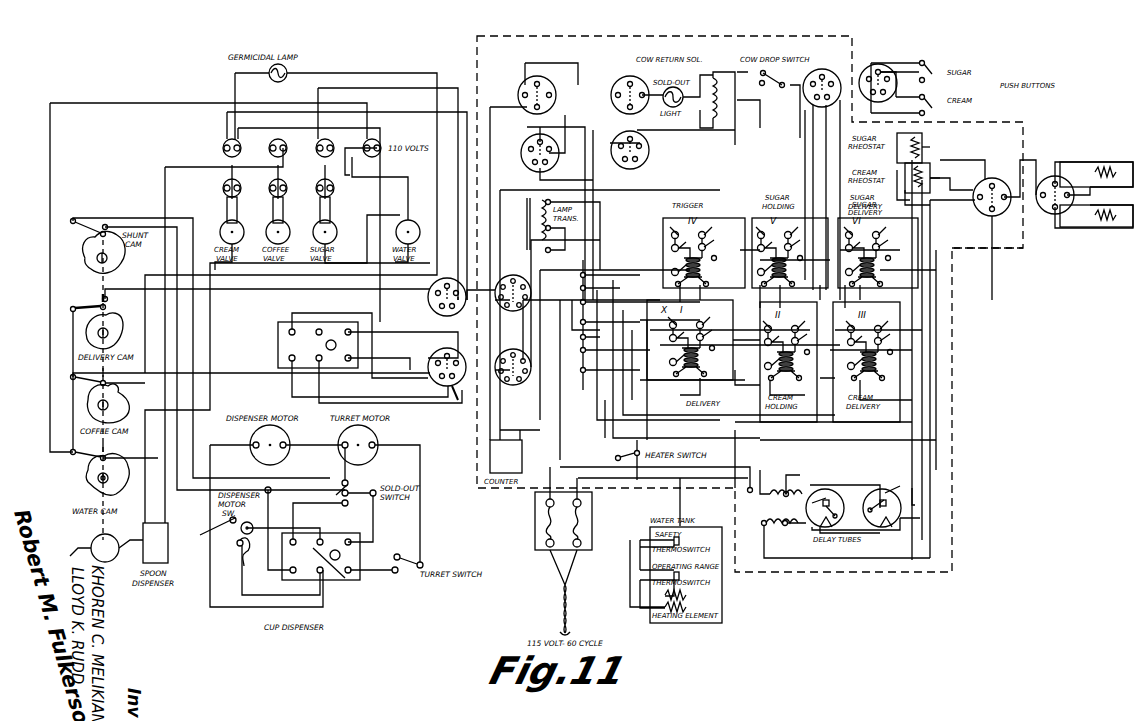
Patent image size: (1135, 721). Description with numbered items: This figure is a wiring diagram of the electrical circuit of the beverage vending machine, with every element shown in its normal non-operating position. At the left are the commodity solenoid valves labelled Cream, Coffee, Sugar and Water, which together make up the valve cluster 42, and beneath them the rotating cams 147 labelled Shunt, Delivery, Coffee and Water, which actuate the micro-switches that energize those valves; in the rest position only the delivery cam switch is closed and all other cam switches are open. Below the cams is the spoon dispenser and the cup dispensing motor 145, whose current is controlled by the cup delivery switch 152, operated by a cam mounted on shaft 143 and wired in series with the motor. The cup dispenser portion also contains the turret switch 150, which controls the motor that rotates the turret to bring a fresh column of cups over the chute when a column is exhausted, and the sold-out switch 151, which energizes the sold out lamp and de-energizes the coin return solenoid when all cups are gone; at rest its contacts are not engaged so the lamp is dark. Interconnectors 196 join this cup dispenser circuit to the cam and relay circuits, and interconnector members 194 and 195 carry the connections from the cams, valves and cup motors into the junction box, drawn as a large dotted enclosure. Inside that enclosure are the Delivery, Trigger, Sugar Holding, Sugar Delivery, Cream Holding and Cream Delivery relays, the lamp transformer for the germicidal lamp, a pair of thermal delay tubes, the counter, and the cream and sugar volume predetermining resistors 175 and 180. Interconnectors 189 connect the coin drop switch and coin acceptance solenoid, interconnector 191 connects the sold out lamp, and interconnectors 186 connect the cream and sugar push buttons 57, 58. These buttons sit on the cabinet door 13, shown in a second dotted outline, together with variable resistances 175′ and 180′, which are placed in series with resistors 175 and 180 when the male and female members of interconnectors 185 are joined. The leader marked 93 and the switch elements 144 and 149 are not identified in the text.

The door 13 is at (1072, 240).
The valve cluster 42 is at (207, 204).
The cream push button 57 is at (932, 112).
The sugar push button 58 is at (928, 60).
The control chassis 93 is at (985, 253).
The shaft 143 is at (98, 480).
The shunt cam switch 144 is at (101, 226).
The motor 145 is at (90, 545).
The cams 147 is at (82, 258).
The cam operated switch 149 is at (70, 308).
The switch 150 is at (400, 572).
The switch 151 is at (342, 504).
The switch 152 is at (248, 566).
The cream volume predetermining resistor 175 is at (940, 167).
The variable resistance 175' is at (1096, 174).
The sugar volume predetermining resistor 180 is at (935, 145).
The variable resistance 180' is at (1096, 216).
The interconnectors 185 is at (997, 182).
The interconnectors 186 is at (832, 75).
The interconnectors 189 is at (555, 140).
The interconnector 191 is at (552, 92).
The interconnector member 194 is at (498, 383).
The interconnector member 195 is at (500, 300).
The interconnectors 196 is at (283, 367).